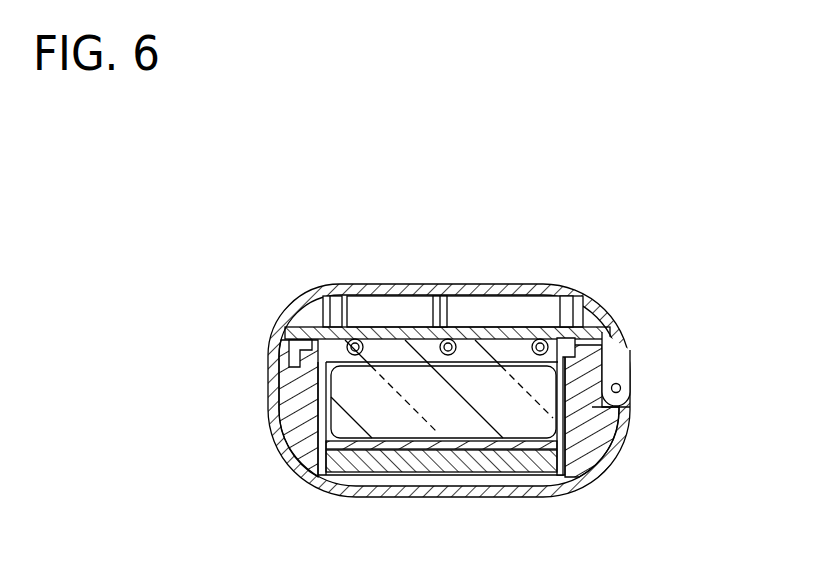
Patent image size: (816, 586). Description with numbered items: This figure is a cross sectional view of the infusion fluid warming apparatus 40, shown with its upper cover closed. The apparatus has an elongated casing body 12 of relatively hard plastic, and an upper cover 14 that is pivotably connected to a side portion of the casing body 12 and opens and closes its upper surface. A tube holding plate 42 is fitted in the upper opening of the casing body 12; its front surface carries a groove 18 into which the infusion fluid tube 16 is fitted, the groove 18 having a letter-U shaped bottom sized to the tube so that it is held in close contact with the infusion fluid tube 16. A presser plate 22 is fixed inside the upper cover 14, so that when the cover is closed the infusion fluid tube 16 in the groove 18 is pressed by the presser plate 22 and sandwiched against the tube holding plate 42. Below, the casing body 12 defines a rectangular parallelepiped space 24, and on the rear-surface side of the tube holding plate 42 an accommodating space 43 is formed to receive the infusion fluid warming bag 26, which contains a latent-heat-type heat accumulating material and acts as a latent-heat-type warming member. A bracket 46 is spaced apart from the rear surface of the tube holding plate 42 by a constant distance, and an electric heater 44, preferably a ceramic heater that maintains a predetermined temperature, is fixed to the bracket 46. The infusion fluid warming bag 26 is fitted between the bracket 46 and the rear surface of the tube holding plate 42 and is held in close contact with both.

The infusion fluid warming apparatus 40 is at (681, 218).
The casing body 12 is at (305, 475).
The upper cover 14 is at (517, 288).
The infusion fluid tube 16 is at (357, 339).
The groove 18 is at (447, 339).
The presser plate 22 is at (600, 331).
The rectangular parallelepiped space 24 is at (543, 478).
The infusion fluid warming bag 26 is at (336, 435).
The tube holding plate 42 is at (287, 350).
The accommodating space 43 is at (560, 440).
The electric heater 44 is at (421, 462).
The bracket 46 is at (484, 451).